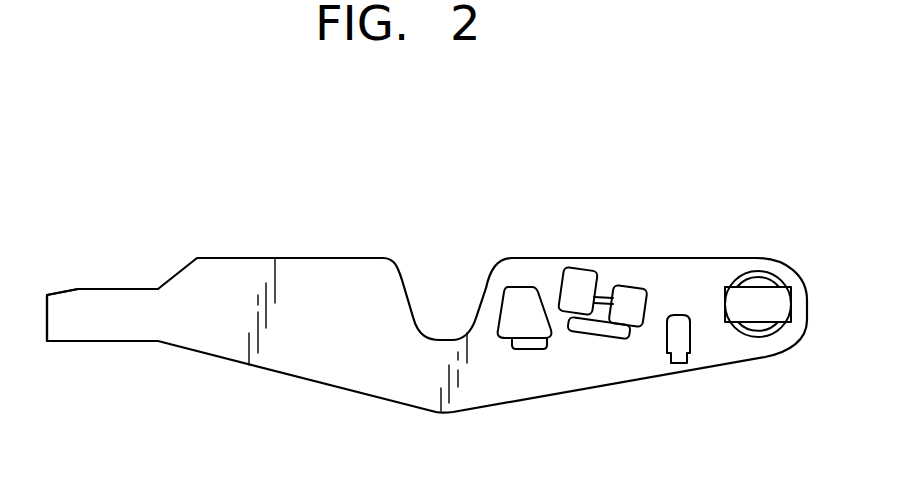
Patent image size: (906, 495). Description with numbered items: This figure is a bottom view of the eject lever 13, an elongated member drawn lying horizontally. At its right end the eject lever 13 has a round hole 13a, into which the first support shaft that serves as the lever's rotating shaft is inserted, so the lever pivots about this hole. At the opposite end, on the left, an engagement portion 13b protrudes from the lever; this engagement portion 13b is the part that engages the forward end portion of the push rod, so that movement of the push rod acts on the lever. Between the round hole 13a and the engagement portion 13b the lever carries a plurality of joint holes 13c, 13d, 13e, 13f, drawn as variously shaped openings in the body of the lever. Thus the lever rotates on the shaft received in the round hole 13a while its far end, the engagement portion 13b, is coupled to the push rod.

The eject lever 13 is at (358, 257).
The round hole 13a is at (760, 320).
The engagement portion 13b is at (108, 342).
The joint hole 13c is at (582, 280).
The joint hole 13d is at (523, 290).
The joint hole 13e is at (637, 292).
The joint hole 13f is at (682, 333).